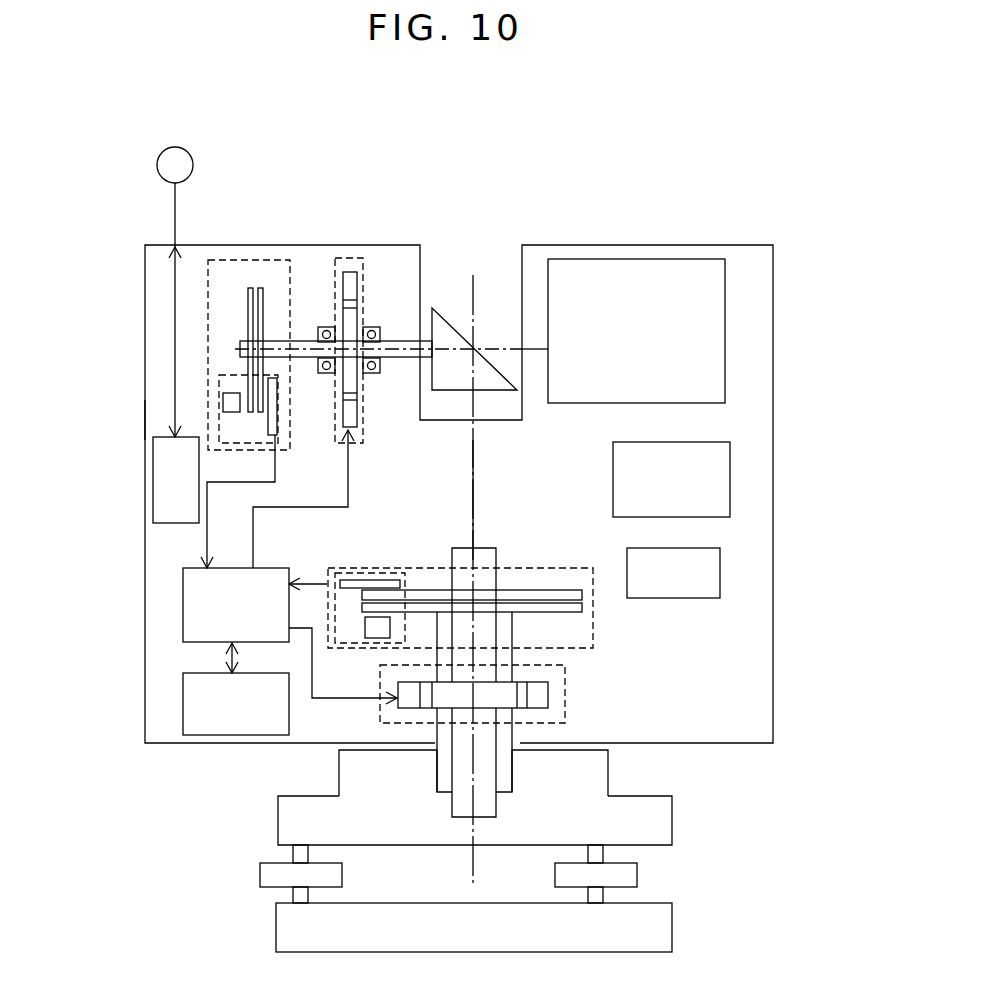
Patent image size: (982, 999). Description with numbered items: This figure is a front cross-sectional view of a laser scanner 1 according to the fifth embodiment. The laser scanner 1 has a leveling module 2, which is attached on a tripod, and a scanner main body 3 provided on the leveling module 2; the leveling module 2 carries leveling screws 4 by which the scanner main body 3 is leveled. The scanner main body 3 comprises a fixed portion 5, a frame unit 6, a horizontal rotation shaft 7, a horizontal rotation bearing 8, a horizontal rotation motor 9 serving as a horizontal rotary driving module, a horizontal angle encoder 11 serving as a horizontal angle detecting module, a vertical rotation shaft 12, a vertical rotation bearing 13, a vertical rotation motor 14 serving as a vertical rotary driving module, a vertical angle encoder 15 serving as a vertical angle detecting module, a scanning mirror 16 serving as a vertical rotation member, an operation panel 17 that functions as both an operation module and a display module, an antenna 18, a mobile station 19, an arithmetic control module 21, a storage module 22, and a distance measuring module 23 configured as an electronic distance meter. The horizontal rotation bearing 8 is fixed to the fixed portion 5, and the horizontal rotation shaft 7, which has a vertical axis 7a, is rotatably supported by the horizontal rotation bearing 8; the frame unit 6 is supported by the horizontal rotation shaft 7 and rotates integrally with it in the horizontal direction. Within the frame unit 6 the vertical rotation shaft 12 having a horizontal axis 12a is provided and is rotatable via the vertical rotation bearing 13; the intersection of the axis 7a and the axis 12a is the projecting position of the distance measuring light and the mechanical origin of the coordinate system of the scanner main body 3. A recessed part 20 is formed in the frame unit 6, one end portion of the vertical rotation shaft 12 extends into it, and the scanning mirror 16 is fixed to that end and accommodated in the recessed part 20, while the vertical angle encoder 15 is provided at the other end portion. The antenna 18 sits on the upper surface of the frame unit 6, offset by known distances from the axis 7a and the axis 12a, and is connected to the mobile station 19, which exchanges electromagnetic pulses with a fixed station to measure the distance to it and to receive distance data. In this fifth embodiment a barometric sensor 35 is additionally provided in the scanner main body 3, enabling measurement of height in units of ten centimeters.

The laser scanner 1 is at (70, 181).
The leveling module 2 is at (278, 817).
The scanner main body 3 is at (774, 305).
The leveling screws 4 is at (260, 875).
The fixed portion 5 is at (608, 772).
The frame unit 6 is at (144, 415).
The horizontal rotation shaft 7 is at (496, 578).
The vertical axis 7a is at (472, 496).
The horizontal rotation bearing 8 is at (512, 762).
The horizontal rotation motor 9 is at (565, 697).
The horizontal angle encoder 11 is at (560, 568).
The vertical rotation shaft 12 is at (395, 360).
The horizontal axis 12a is at (228, 348).
The vertical rotation bearing 13 is at (372, 327).
The vertical rotation motor 14 is at (347, 258).
The vertical angle encoder 15 is at (234, 260).
The scanning mirror 16 is at (432, 308).
The operation panel 17 is at (730, 467).
The antenna 18 is at (157, 165).
The mobile station 19 is at (152, 472).
The recessed part 20 is at (452, 249).
The arithmetic control module 21 is at (183, 607).
The storage module 22 is at (183, 699).
The distance measuring module 23 is at (617, 258).
The barometric sensor 35 is at (720, 558).